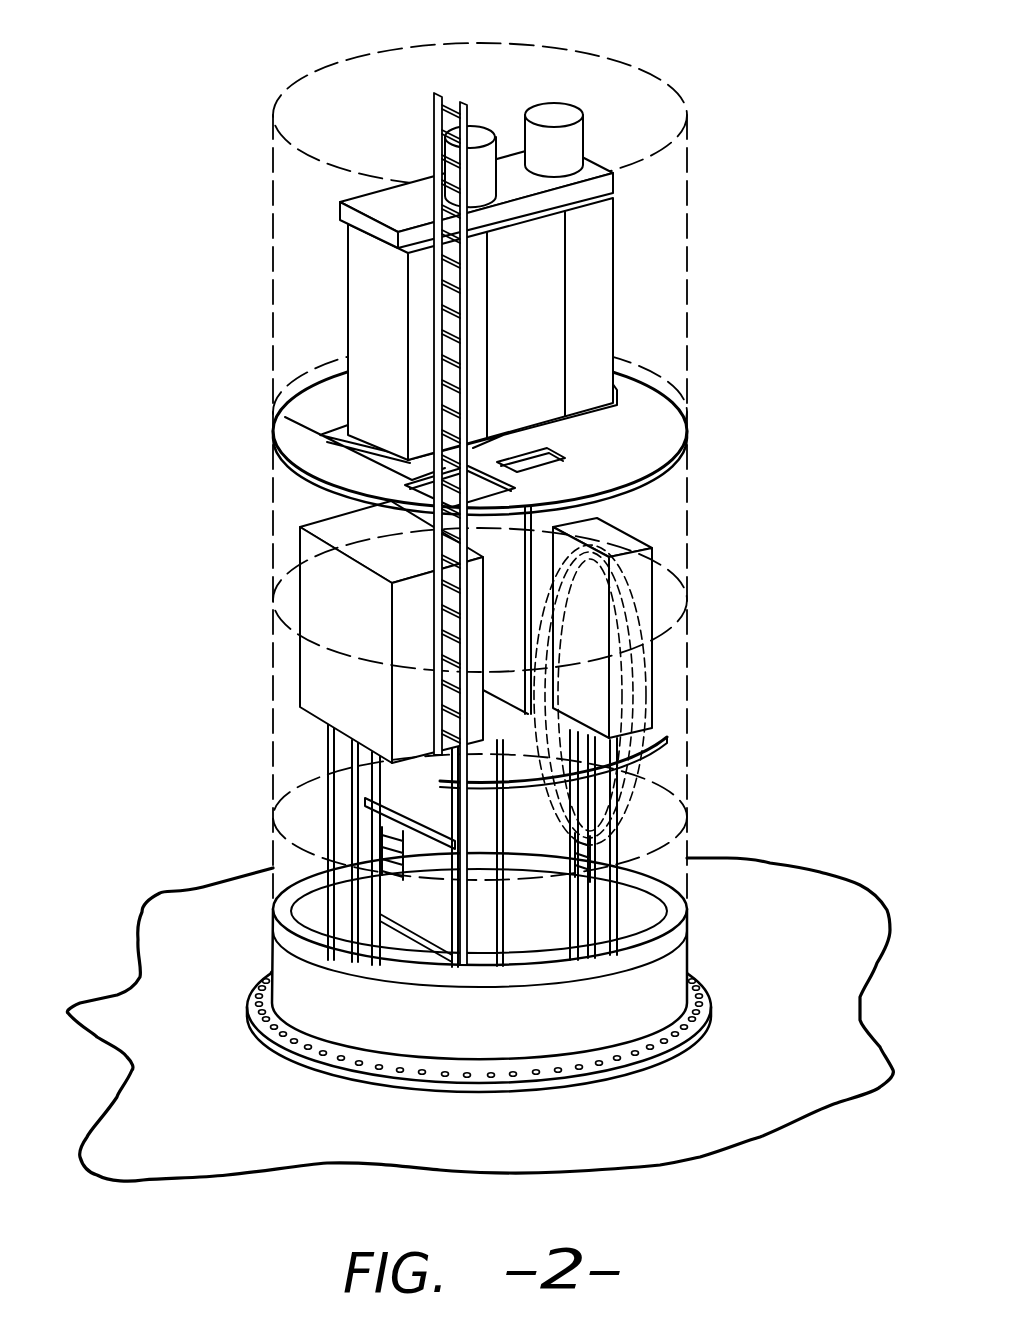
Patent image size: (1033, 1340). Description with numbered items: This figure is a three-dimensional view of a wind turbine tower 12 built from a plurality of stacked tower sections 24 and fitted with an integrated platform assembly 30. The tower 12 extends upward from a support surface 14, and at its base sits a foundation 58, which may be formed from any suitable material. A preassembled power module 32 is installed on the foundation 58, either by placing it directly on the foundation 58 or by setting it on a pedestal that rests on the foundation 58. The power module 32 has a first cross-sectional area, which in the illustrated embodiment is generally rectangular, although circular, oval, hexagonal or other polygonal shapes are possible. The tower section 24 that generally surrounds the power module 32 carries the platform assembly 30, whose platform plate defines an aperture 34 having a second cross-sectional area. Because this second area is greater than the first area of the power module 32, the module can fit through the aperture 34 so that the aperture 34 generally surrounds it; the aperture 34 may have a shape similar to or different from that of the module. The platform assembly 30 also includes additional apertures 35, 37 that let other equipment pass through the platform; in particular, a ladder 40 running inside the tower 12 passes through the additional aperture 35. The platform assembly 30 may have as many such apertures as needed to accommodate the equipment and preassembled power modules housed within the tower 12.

The tower 12 is at (733, 122).
The support surface 14 is at (210, 915).
The tower sections 24 is at (308, 297).
The platform assembly 30 is at (330, 458).
The preassembled power module 32 is at (590, 277).
The aperture 34 is at (583, 417).
The additional aperture 35 is at (633, 480).
The additional aperture 37 is at (617, 377).
The ladder 40 is at (437, 118).
The foundation 58 is at (697, 965).